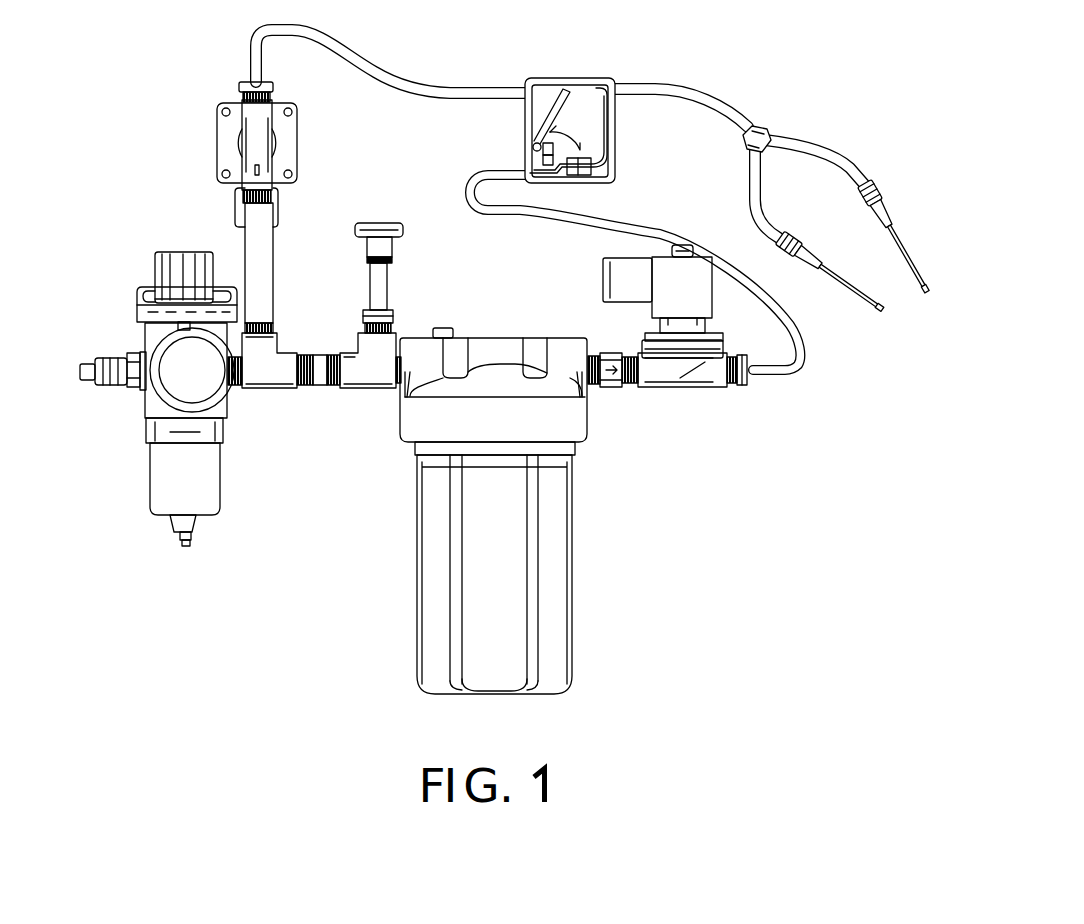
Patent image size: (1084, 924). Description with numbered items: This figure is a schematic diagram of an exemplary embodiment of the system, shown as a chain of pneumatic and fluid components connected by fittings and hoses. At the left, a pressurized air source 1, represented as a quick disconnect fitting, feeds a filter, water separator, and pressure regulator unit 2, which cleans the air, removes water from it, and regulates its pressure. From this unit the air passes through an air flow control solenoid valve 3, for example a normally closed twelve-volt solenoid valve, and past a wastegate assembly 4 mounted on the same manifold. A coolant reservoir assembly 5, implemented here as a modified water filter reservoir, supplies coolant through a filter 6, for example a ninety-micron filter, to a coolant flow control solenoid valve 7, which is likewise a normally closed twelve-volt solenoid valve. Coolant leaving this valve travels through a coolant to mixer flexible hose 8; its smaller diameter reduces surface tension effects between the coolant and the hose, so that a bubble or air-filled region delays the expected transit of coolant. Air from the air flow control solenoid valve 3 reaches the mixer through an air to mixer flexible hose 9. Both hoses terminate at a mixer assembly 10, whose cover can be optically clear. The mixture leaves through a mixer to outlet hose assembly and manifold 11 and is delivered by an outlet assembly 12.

The pressurized air source 1 is at (108, 360).
The filter, water separator, and pressure regulator unit 2 is at (140, 318).
The air flow control solenoid valve 3 is at (238, 186).
The wastegate assembly 4 is at (375, 305).
The coolant reservoir assembly 5 is at (417, 457).
The filter 6 is at (623, 388).
The coolant flow control solenoid valve 7 is at (602, 259).
The coolant to mixer flexible hose 8 is at (461, 196).
The air to mixer flexible hose 9 is at (407, 77).
The mixer assembly 10 is at (523, 75).
The mixer to outlet hose assembly and manifold 11 is at (768, 127).
The outlet assembly 12 is at (893, 210).